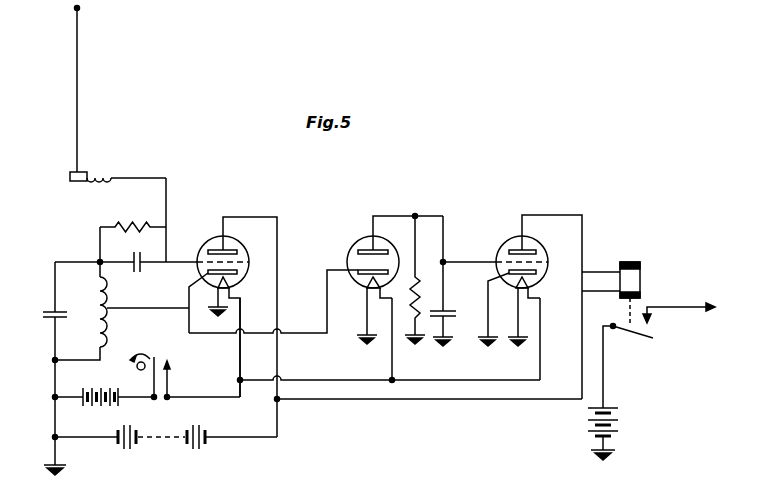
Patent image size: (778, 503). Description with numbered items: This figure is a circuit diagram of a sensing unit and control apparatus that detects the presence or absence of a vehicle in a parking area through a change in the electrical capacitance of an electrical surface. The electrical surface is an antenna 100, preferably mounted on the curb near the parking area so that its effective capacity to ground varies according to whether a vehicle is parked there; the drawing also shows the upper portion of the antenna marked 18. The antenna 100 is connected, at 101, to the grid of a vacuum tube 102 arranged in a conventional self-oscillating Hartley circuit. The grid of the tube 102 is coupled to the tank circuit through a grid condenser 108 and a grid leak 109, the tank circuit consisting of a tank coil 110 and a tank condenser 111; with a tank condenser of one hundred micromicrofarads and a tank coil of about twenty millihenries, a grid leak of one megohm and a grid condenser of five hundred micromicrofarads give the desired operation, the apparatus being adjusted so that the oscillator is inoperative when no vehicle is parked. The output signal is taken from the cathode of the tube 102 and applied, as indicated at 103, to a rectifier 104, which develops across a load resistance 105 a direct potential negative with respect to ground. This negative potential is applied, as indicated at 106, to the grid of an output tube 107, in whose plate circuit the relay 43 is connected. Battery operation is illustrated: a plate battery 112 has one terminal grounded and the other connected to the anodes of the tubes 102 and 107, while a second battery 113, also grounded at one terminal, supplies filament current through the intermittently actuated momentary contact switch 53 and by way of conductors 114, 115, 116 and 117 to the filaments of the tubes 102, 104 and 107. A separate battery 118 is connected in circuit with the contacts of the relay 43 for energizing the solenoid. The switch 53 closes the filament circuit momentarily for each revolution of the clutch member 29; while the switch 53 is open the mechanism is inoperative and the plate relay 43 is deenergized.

The antenna 18 is at (84, 65).
The antenna 100 is at (80, 137).
The connection to grid 101 is at (168, 198).
The grid leak 109 is at (142, 223).
The grid condenser 108 is at (142, 268).
The tank condenser 111 is at (50, 317).
The tank coil 110 is at (108, 340).
The vacuum tube 102 is at (208, 240).
The connection to rectifier 103 is at (309, 330).
The rectifier 104 is at (355, 238).
The load resistance 105 is at (423, 290).
The connection to output grid 106 is at (468, 258).
The output tube 107 is at (512, 236).
The conductor 117 is at (543, 354).
The conductor 116 is at (395, 367).
The conductor 114 is at (313, 379).
The conductor 115 is at (242, 367).
The relay 43 is at (631, 280).
The separate battery 118 is at (623, 421).
The second battery 113 is at (83, 408).
The plate battery 112 is at (138, 450).
The clutch member 29 is at (148, 360).
The momentary contact switch 53 is at (172, 372).